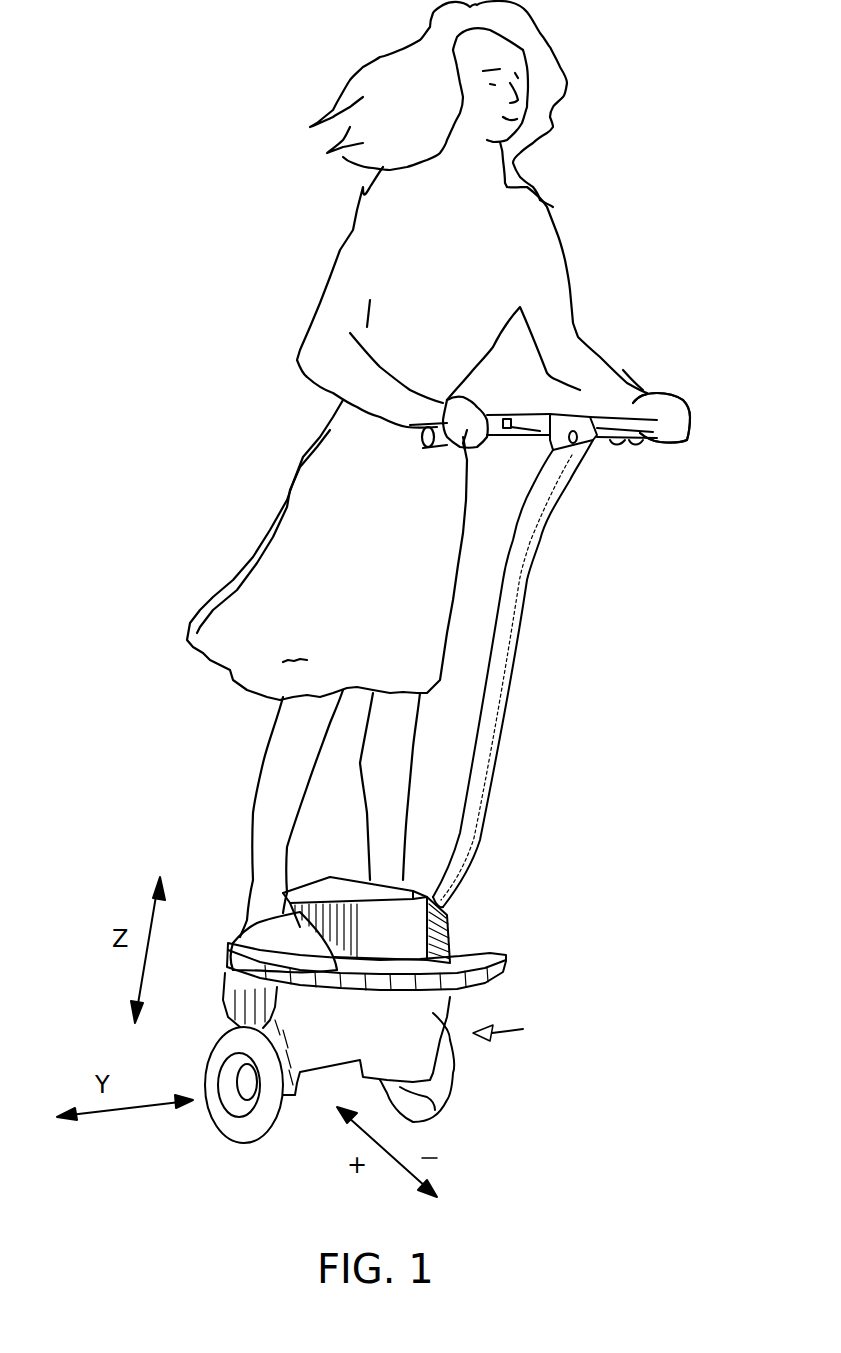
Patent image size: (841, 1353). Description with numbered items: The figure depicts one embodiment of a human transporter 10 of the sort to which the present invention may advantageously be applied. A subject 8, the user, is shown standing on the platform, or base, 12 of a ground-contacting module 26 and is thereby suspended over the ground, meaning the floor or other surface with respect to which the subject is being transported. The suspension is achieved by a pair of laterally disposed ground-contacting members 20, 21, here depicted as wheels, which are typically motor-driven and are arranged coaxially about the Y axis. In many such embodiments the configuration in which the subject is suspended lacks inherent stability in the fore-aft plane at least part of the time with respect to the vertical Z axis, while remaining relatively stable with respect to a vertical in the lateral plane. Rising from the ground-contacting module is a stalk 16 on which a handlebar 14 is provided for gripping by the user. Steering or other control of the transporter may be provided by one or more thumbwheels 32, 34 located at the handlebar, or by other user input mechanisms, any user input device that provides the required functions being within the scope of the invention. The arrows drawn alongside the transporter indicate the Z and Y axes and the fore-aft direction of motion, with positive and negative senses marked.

The subject 8 is at (543, 223).
The transporter 10 is at (218, 492).
The platform 12 is at (505, 963).
The handlebar 14 is at (602, 456).
The stalk 16 is at (510, 643).
The ground-contacting member 20 is at (443, 1087).
The ground-contacting member 21 is at (240, 1143).
The ground-contacting module 26 is at (520, 1032).
The thumbwheel 32 is at (647, 445).
The thumbwheel 34 is at (617, 447).